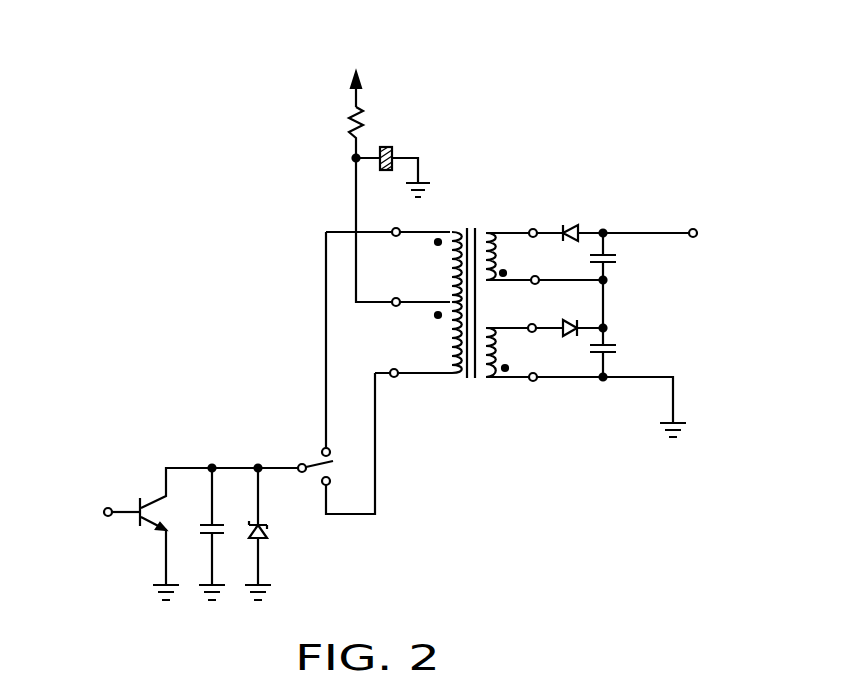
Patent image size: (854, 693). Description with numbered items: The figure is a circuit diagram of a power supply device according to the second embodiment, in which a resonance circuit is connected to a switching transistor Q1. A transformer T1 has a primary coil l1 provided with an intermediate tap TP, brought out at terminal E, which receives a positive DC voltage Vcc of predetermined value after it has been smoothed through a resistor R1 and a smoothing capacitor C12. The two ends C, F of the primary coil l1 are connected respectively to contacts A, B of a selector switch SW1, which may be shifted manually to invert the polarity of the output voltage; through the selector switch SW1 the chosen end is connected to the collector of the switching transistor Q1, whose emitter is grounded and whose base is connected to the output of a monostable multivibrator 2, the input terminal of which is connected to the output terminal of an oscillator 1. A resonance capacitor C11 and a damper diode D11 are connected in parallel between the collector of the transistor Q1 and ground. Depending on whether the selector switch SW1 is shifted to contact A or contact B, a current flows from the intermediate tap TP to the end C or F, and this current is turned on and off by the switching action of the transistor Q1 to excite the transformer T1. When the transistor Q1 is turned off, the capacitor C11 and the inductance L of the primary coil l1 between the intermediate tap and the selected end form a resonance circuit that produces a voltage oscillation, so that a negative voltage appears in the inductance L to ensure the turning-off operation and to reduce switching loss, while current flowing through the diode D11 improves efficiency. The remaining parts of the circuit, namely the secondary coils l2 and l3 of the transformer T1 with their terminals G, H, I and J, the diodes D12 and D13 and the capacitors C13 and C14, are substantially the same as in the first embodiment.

The positive DC voltage Vcc is at (361, 75).
The resistor R1 is at (364, 122).
The smoothing capacitor C12 is at (394, 150).
The end of primary coil C is at (392, 229).
The terminal E is at (392, 299).
The end of primary coil F is at (390, 370).
The transformer T1 is at (467, 226).
The inductance L is at (420, 234).
The intermediate tap TP is at (420, 305).
The primary coil l1 is at (452, 378).
The secondary winding l2 is at (488, 236).
The secondary winding l3 is at (490, 378).
The terminal G is at (533, 229).
The rectifier diode D12 is at (570, 227).
The monostable multivibrator 2 is at (693, 229).
The terminal H is at (538, 277).
The smoothing capacitor C13 is at (618, 260).
The terminal I is at (528, 326).
The rectifier diode D13 is at (571, 325).
The terminal J is at (538, 375).
The smoothing capacitor C14 is at (618, 348).
The oscillator 1 is at (105, 508).
The switching transistor Q1 is at (138, 500).
The resonance capacitor C11 is at (200, 527).
The damper diode D11 is at (270, 530).
The selector switch SW1 is at (310, 462).
The contact A is at (330, 452).
The contact B is at (330, 483).